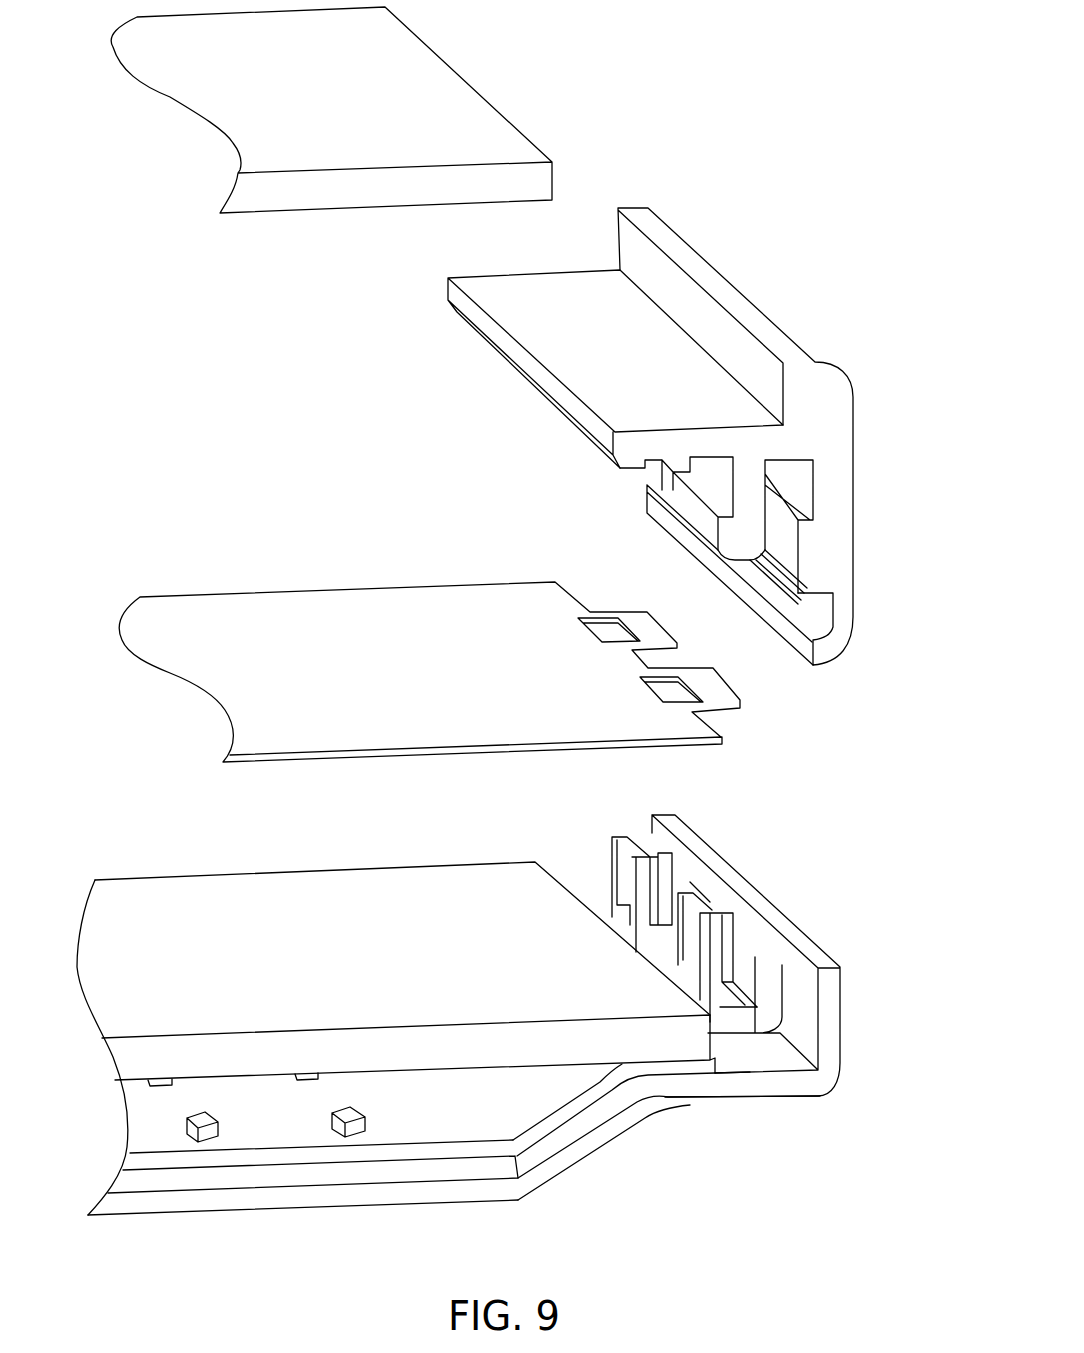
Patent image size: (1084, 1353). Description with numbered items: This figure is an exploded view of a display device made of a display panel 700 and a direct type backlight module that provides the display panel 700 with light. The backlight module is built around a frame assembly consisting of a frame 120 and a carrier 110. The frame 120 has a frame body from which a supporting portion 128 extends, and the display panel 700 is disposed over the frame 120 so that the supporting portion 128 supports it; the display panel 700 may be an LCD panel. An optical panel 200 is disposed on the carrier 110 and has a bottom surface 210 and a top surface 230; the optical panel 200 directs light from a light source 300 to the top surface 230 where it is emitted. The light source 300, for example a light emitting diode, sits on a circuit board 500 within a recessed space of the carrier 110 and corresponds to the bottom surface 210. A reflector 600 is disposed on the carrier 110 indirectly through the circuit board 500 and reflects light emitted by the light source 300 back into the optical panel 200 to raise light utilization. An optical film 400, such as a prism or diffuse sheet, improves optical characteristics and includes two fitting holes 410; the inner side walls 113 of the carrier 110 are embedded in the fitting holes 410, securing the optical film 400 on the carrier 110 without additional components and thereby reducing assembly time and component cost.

The display panel 700 is at (467, 87).
The supporting portion 128 is at (587, 297).
The frame 120 is at (833, 555).
The optical film 400 is at (355, 627).
The fitting holes 410 is at (680, 695).
The optical panel 200 is at (233, 1053).
The top surface 230 is at (400, 935).
The inner side walls 113 is at (648, 880).
The carrier 110 is at (832, 1020).
The bottom surface 210 is at (550, 1070).
The circuit board 500 is at (437, 1165).
The reflector 600 is at (343, 1150).
The light source 300 is at (205, 1140).